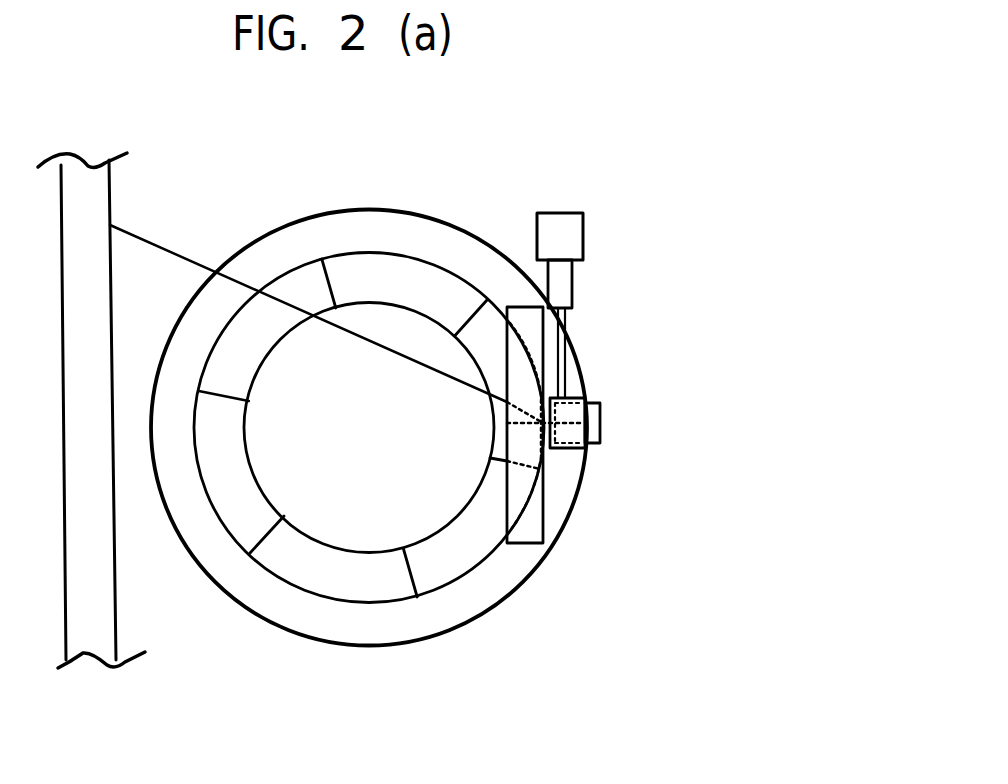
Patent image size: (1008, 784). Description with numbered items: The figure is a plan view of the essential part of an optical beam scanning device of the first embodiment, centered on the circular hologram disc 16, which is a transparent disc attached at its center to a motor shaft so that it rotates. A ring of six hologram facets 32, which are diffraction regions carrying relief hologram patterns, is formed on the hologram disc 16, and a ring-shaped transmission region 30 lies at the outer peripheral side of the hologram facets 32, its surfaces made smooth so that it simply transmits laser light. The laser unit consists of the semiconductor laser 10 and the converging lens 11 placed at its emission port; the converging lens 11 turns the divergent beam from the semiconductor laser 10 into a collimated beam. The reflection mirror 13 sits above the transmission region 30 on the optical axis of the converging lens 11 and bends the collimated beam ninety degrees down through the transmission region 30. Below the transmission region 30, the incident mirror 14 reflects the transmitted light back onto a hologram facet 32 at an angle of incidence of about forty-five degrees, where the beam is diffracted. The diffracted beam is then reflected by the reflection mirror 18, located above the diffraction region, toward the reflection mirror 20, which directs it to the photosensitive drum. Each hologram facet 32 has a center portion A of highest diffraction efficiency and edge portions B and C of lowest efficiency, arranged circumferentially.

The semiconductor laser 10 is at (570, 233).
The converging lens 11 is at (563, 285).
The reflection mirror 13 is at (568, 385).
The incident mirror 14 is at (593, 423).
The hologram disc 16 is at (387, 195).
The reflection mirror 18 is at (528, 525).
The reflection mirror 20 is at (87, 202).
The transmission region 30 is at (478, 595).
The hologram facets 32 is at (443, 565).